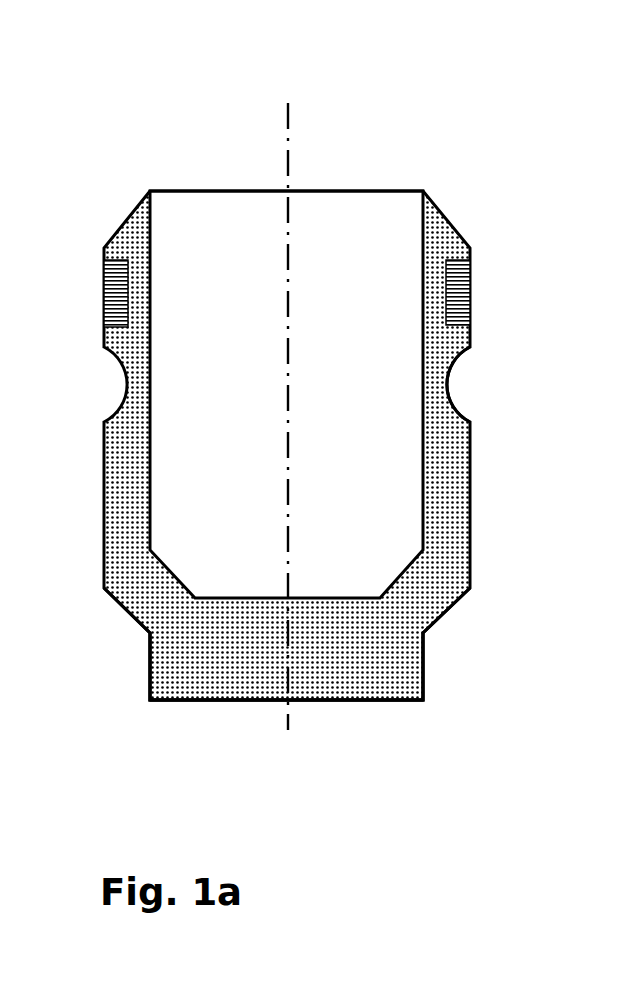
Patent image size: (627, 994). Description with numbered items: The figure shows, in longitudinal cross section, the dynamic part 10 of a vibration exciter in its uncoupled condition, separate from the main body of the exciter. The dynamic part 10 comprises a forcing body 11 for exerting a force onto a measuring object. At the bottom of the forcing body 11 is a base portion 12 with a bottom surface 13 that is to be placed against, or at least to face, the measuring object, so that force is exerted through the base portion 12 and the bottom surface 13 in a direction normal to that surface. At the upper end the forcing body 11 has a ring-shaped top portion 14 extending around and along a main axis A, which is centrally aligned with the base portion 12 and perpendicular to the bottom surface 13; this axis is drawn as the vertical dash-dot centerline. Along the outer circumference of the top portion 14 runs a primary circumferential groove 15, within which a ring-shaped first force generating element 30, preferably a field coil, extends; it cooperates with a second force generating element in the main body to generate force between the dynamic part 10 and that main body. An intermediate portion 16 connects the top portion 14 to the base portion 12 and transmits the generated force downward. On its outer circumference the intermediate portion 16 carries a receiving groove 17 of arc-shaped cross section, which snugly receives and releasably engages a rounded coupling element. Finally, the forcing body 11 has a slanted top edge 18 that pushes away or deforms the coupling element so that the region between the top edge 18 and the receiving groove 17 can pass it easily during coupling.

The dynamic part 10 is at (461, 86).
The main axis A is at (285, 655).
The forcing body 11 is at (196, 660).
The base portion 12 is at (501, 663).
The bottom surface 13 is at (333, 700).
The top portion 14 is at (512, 240).
The primary circumferential groove 15 is at (470, 290).
The intermediate portion 16 is at (514, 360).
The receiving groove 17 is at (447, 382).
The top edge 18 is at (449, 219).
The first force generating element 30 is at (106, 282).